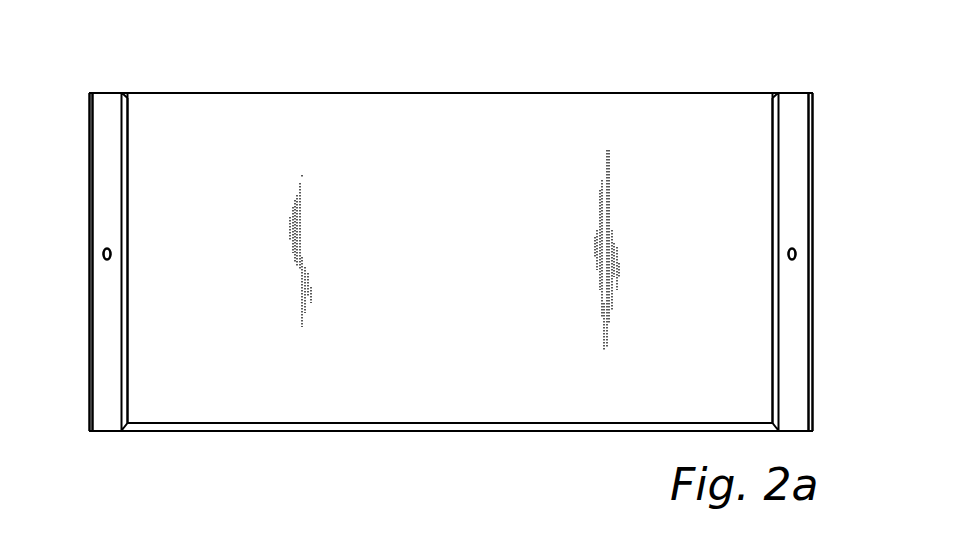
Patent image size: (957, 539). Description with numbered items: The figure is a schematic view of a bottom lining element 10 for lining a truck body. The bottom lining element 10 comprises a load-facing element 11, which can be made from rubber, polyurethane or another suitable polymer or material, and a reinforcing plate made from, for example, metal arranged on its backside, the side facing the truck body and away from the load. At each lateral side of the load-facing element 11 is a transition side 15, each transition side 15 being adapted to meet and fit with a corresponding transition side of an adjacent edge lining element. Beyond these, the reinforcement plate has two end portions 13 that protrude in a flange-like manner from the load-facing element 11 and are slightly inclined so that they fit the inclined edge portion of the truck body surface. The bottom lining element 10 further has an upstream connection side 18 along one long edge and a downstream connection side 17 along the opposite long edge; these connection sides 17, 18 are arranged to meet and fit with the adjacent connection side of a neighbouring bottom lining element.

The bottom lining element 10 is at (836, 108).
The load-facing element 11 is at (670, 107).
The end portions 13 is at (102, 170).
The transition sides 15 is at (127, 283).
The downstream connection side 17 is at (403, 428).
The upstream connection side 18 is at (468, 93).